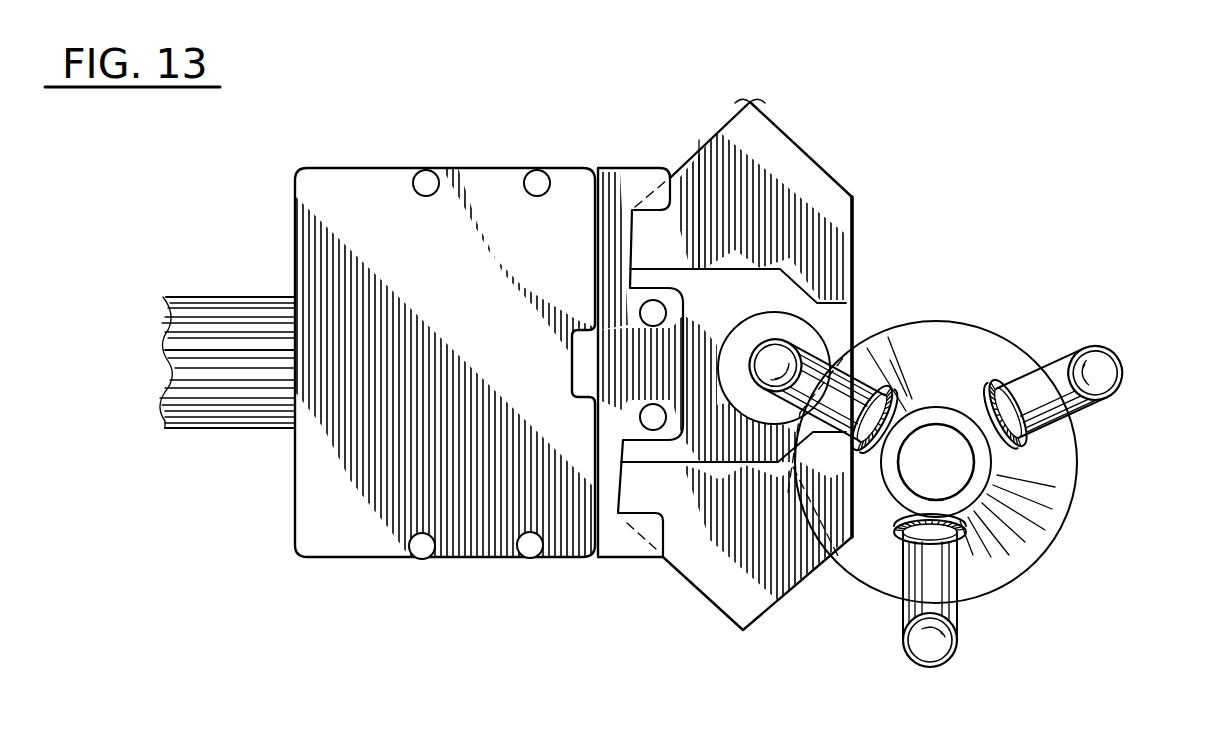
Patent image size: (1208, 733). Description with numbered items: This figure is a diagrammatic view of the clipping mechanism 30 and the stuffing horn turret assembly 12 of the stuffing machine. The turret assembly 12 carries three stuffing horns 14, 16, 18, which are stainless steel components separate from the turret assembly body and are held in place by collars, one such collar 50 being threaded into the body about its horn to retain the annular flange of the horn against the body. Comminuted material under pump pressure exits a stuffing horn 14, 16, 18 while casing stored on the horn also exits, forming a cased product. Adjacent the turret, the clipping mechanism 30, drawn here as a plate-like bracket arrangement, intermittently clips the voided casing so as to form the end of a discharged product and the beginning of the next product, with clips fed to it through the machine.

The stuffing horn turret assembly 12 is at (976, 462).
The stuffing horn 14 is at (916, 356).
The stuffing horn 16 is at (1092, 391).
The stuffing horn 18 is at (960, 642).
The clipping mechanism 30 is at (367, 537).
The collar 50 is at (972, 547).